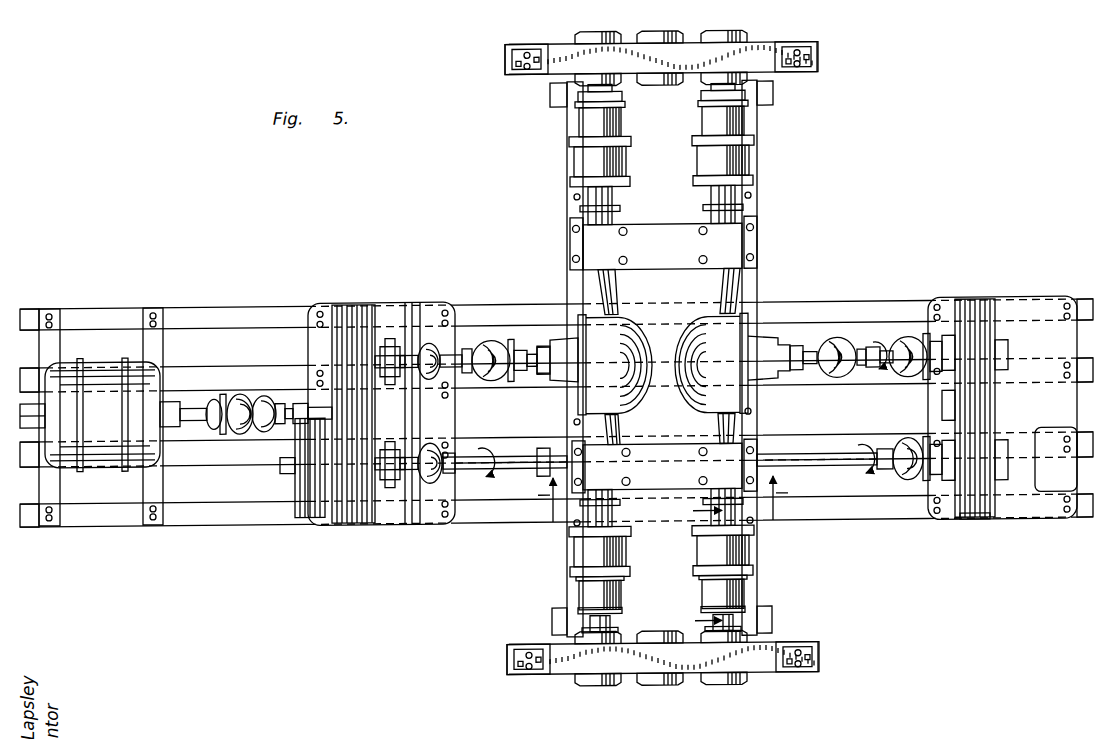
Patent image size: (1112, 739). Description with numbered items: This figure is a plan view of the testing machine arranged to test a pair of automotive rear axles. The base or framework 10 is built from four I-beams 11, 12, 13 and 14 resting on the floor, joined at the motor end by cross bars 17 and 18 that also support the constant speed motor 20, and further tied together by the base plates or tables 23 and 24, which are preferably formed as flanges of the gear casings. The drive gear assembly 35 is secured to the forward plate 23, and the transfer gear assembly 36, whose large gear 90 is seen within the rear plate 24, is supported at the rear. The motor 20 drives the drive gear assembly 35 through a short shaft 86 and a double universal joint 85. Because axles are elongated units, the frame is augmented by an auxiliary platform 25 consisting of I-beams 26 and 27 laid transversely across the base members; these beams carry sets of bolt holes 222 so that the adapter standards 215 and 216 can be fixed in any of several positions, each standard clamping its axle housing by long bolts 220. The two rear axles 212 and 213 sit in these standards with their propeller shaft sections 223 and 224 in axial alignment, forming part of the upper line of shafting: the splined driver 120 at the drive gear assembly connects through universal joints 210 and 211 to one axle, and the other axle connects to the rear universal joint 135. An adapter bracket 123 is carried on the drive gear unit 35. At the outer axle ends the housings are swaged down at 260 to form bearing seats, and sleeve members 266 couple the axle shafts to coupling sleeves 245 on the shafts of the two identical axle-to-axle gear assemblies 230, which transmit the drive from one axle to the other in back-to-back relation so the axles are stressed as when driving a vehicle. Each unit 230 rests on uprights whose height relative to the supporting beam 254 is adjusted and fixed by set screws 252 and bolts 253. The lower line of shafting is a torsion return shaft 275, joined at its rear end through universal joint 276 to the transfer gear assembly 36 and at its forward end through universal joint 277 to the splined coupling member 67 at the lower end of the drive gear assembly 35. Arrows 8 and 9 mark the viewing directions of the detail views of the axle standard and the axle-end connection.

The direction arrow 8 is at (663, 510).
The direction arrow 9 is at (700, 563).
The base or framework 10 is at (210, 524).
The I-beam 11 is at (173, 523).
The I-beam 12 is at (204, 460).
The I-beam 13 is at (180, 366).
The I-beam 14 is at (183, 306).
The cross bar 17 is at (98, 484).
The cross bar 18 is at (143, 484).
The constant speed motor 20 is at (100, 362).
The forward supporting plate 23 is at (328, 302).
The rear plate member 24 is at (1030, 300).
The auxiliary platform 25 is at (566, 580).
The I-beam 26 is at (568, 286).
The I-beam 27 is at (758, 578).
The drive gear assembly 35 is at (350, 523).
The transfer gear assembly 36 is at (973, 521).
The coupling sleeve 67 is at (394, 480).
The double universal joint 85 is at (241, 400).
The short shaft 86 is at (195, 406).
The gear wheel 90 is at (970, 303).
The splined driver 120 is at (392, 345).
The adapter bracket 123 is at (411, 522).
The rear universal joint 135 is at (906, 340).
The universal joint 210 is at (426, 348).
The universal joint 211 is at (485, 342).
The rear axle 212 is at (617, 283).
The rear axle 213 is at (718, 283).
The adapter standard 215 is at (657, 225).
The adapter standard 216 is at (664, 494).
The long bolt 220 is at (572, 259).
The bolt hole 222 is at (574, 198).
The propeller shaft section 223 is at (511, 339).
The propeller shaft section 224 is at (808, 348).
The axle-to-axle gear assembly 230 is at (753, 46).
The coupling sleeve 245 is at (586, 92).
The set screw 252 is at (505, 62).
The bolt 253 is at (522, 74).
The supporting beam 254 is at (801, 74).
The swaged axle housing end 260 is at (587, 162).
The sleeve member 266 is at (590, 122).
The torsion return shaft 275 is at (800, 468).
The universal joint 276 is at (908, 484).
The universal joint 277 is at (431, 444).